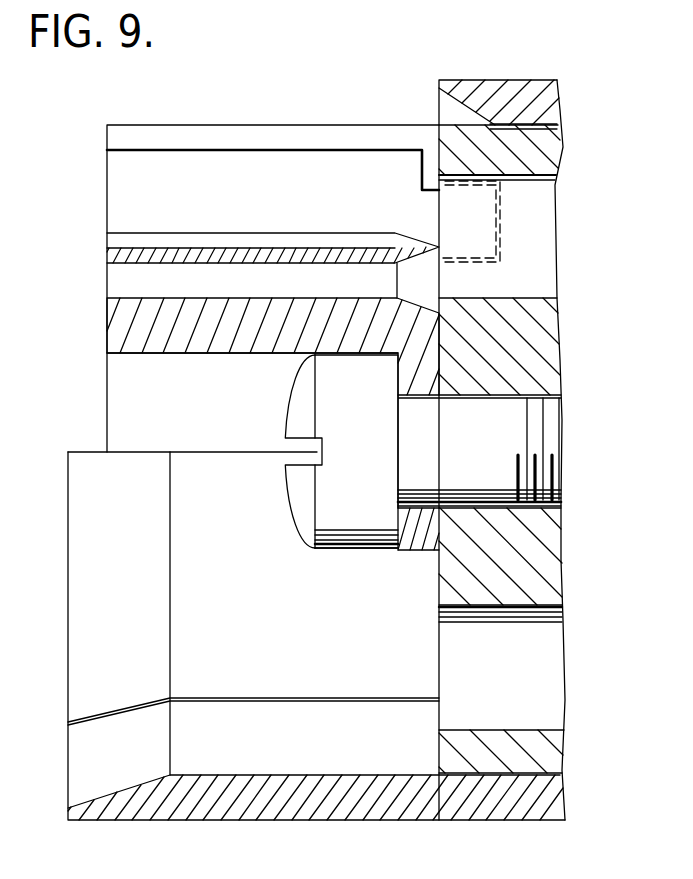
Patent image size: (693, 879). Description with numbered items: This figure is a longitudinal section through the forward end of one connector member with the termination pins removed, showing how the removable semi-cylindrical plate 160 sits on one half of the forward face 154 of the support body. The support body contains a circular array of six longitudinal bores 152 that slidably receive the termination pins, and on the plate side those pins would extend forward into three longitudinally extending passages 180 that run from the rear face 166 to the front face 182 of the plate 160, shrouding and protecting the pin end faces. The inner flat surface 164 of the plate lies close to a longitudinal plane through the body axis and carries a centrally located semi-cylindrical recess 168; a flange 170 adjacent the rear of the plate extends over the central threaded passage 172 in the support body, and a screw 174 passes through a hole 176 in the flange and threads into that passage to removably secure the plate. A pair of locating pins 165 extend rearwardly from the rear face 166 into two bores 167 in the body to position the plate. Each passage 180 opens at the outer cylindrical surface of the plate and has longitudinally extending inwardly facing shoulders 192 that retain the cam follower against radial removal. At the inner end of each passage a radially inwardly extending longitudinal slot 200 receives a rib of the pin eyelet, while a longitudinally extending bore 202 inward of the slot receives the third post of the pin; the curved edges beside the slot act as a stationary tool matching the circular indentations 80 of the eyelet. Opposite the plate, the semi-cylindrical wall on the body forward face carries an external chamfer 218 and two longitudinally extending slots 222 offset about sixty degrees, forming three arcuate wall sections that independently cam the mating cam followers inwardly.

The indentations 80 is at (572, 148).
The longitudinal bores 152 is at (550, 186).
The forward face 154 is at (438, 588).
The semi-cylindrical plate 160 is at (100, 346).
The inner flat surface 164 is at (132, 455).
The locating pins 165 is at (473, 262).
The rear face 166 is at (455, 330).
The bores 167 is at (463, 195).
The semi-cylindrical recess 168 is at (115, 360).
The flange 170 is at (420, 546).
The central threaded passage 172 is at (508, 400).
The screw 174 is at (548, 468).
The hole 176 is at (417, 398).
The longitudinally extending passages 180 is at (125, 200).
The front face 182 is at (112, 285).
The inwardly facing shoulders 192 is at (124, 151).
The longitudinal slot 200 is at (118, 240).
The longitudinally extending bore 202 is at (222, 280).
The chamfer 218 is at (93, 547).
The longitudinally extending slots 222 is at (285, 688).